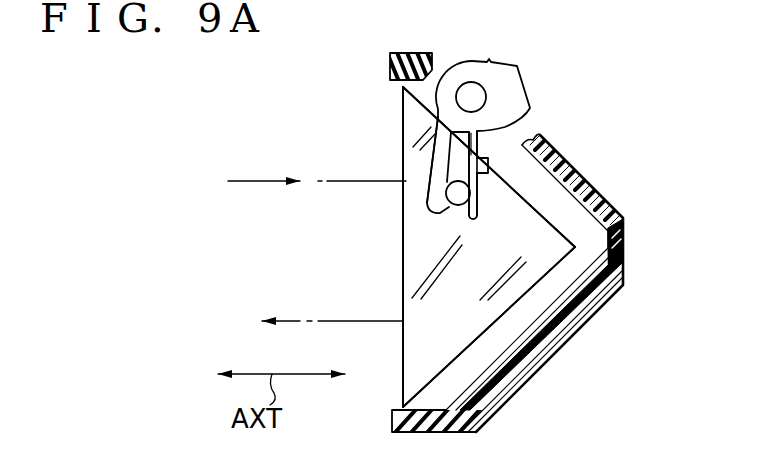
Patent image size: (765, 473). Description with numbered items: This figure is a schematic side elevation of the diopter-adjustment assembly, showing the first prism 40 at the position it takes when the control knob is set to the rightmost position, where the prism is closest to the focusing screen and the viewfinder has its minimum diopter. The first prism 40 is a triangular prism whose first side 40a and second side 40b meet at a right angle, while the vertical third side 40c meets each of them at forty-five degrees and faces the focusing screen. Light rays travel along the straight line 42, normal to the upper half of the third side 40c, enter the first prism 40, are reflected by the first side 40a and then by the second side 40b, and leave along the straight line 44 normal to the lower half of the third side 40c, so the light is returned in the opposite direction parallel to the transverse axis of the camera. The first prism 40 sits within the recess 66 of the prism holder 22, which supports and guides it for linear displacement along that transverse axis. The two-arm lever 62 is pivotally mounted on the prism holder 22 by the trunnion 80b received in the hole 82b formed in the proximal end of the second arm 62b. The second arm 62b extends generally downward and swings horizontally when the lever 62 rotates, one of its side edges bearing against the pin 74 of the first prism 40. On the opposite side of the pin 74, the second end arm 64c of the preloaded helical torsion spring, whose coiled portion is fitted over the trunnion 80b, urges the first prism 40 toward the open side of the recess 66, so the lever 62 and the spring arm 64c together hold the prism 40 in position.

The prism holder 22 is at (604, 202).
The first prism 40 is at (423, 233).
The first functional side 40a is at (512, 208).
The second functional side 40b is at (487, 314).
The third functional side 40c is at (410, 292).
The straight line 42 is at (300, 181).
The straight line 44 is at (292, 320).
The two-arm lever 62 is at (489, 62).
The second arm 62b is at (435, 183).
The second end arm 64c is at (480, 208).
The recess 66 is at (542, 313).
The pin 74 is at (458, 196).
The trunnion 80b is at (468, 103).
The hole 82b is at (469, 89).